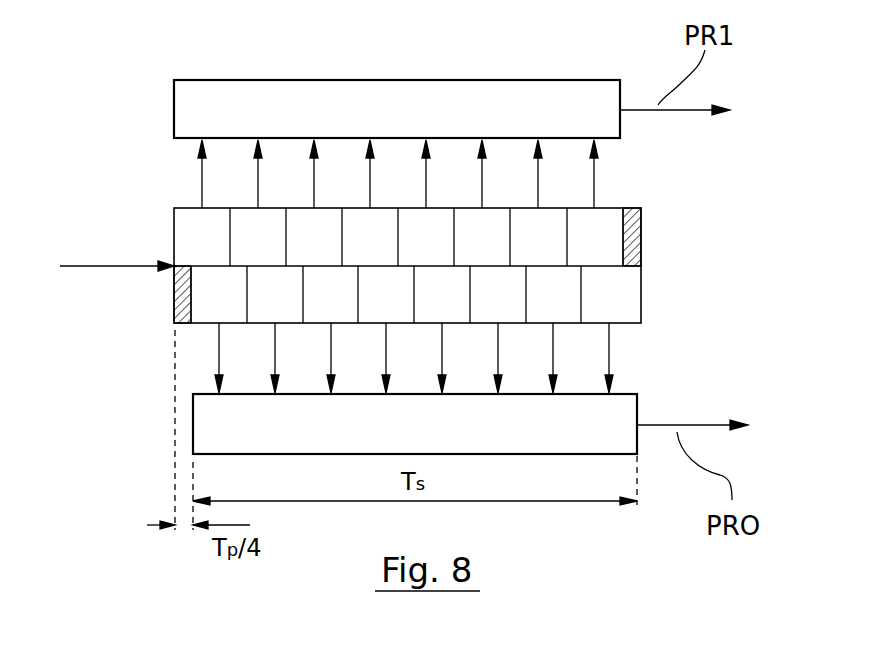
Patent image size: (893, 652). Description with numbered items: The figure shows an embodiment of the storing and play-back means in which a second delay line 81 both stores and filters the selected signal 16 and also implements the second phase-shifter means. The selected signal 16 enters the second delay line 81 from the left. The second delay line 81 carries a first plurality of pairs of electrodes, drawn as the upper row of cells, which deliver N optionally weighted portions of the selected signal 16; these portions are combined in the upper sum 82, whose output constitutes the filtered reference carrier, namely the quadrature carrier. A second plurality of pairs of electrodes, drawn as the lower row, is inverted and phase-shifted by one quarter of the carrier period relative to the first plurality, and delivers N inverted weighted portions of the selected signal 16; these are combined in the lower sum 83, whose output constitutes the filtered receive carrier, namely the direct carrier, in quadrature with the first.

The selected signal 16 is at (118, 270).
The second delay line 81 is at (641, 266).
The sum 82 is at (500, 90).
The sum 83 is at (215, 420).